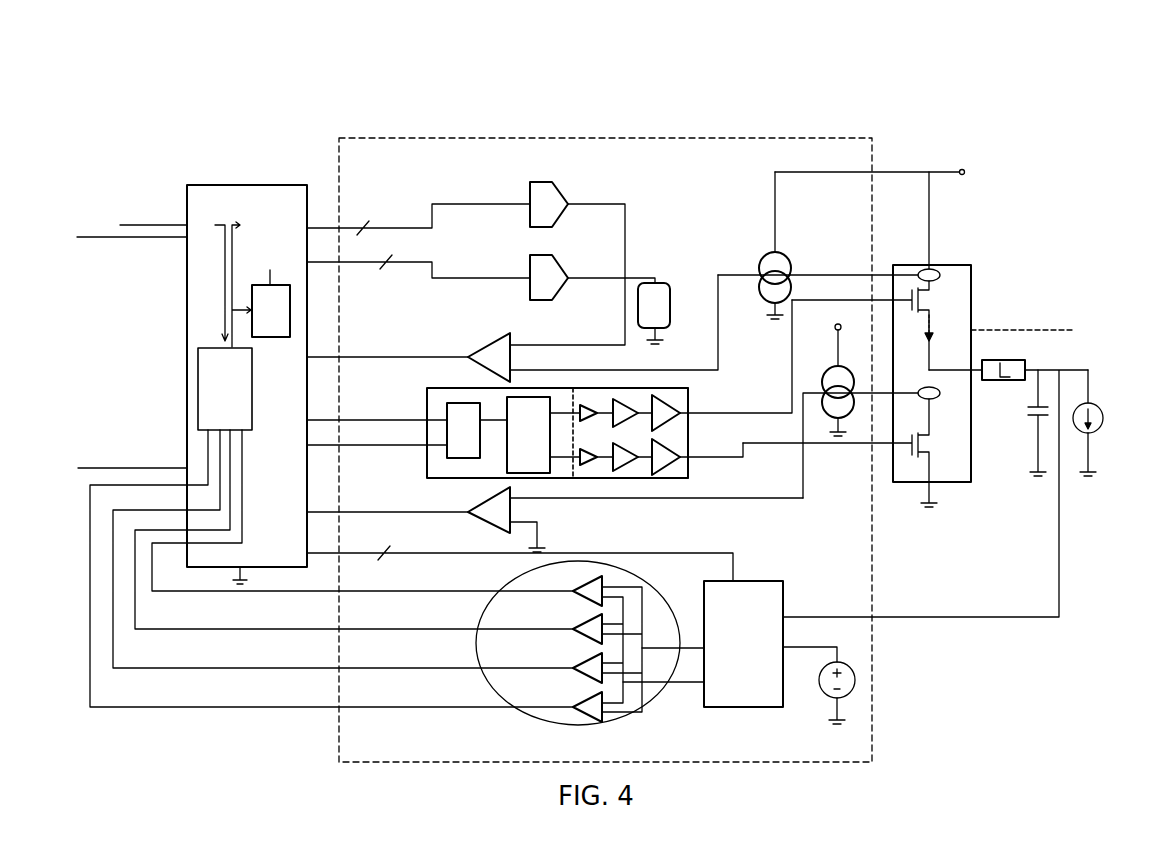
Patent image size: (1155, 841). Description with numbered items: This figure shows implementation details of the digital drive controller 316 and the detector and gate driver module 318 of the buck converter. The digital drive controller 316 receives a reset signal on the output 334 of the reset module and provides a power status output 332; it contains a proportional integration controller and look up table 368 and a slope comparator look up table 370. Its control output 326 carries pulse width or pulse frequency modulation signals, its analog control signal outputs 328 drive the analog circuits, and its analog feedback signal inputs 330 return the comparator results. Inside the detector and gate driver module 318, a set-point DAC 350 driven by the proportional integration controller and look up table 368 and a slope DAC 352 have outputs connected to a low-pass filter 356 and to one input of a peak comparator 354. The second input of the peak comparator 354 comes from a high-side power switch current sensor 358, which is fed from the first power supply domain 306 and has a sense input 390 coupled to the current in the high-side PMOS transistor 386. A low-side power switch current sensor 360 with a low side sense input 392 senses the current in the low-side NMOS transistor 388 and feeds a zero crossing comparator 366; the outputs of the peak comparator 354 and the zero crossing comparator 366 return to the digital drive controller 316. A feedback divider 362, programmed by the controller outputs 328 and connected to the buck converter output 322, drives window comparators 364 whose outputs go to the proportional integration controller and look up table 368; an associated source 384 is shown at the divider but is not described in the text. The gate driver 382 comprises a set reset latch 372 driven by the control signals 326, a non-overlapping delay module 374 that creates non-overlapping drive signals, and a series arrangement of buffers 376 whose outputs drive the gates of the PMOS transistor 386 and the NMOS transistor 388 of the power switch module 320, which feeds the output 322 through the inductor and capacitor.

The first power supply domain 306 is at (915, 160).
The digital drive controller 316 is at (250, 185).
The detector and gate driver module 318 is at (493, 138).
The power switch module 320 is at (950, 265).
The buck converter output 322 is at (1059, 370).
The control output 326 is at (352, 420).
The analog control signal outputs 328 is at (405, 262).
The analog feedback signal inputs 330 is at (392, 357).
The power status output 332 is at (78, 468).
The output of the reset module 334 is at (77, 237).
The set-point digital to analog converter 350 is at (543, 182).
The slope digital to analog converter 352 is at (552, 255).
The peak comparator 354 is at (515, 350).
The low-pass filter 356 is at (665, 283).
The high-side power switch current sensor 358 is at (763, 293).
The low-side power switch current sensor 360 is at (823, 405).
The feedback divider 362 is at (783, 600).
The window comparators 364 is at (490, 690).
The zero crossing comparator 366 is at (511, 510).
The proportional integration controller and look up table 368 is at (198, 420).
The slope comparator look up table 370 is at (290, 290).
The set reset latch 372 is at (455, 403).
The non-overlapping delay module 374 is at (507, 465).
The buffers 376 is at (665, 388).
The gate driver 382 is at (690, 470).
The reference voltage source 384 is at (856, 680).
The PMOS transistor 386 is at (920, 300).
The NMOS transistor 388 is at (920, 452).
The sense input 390 is at (815, 275).
The low side sense input 392 is at (880, 393).